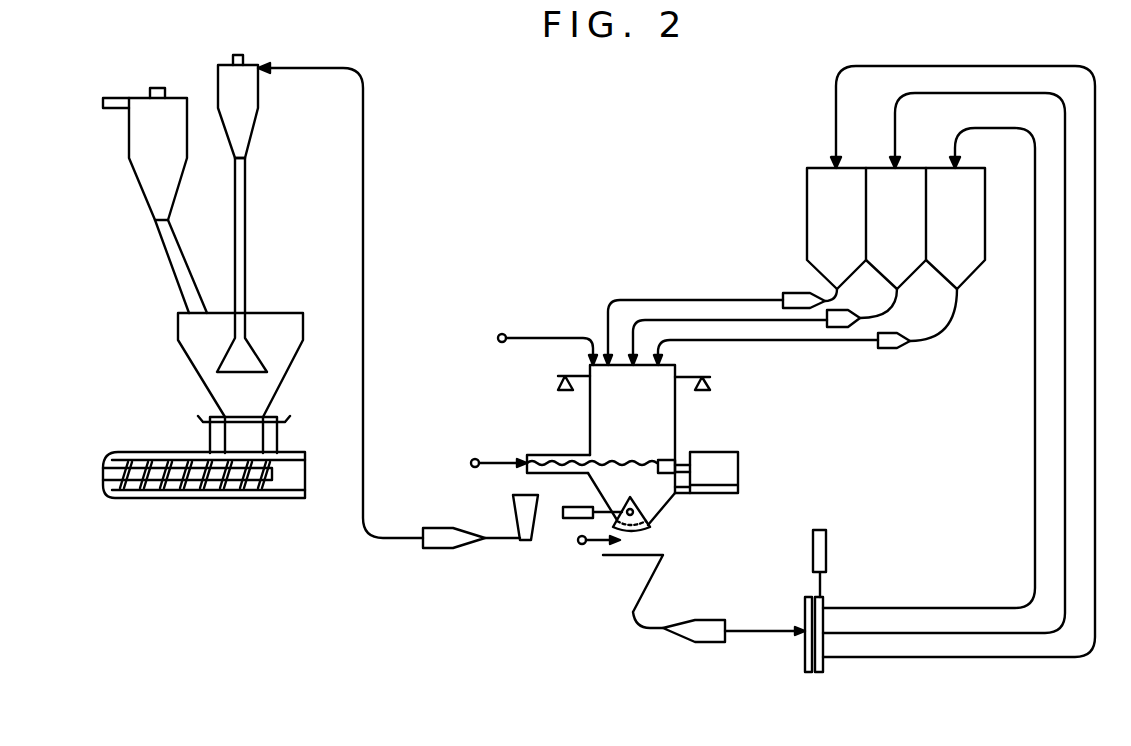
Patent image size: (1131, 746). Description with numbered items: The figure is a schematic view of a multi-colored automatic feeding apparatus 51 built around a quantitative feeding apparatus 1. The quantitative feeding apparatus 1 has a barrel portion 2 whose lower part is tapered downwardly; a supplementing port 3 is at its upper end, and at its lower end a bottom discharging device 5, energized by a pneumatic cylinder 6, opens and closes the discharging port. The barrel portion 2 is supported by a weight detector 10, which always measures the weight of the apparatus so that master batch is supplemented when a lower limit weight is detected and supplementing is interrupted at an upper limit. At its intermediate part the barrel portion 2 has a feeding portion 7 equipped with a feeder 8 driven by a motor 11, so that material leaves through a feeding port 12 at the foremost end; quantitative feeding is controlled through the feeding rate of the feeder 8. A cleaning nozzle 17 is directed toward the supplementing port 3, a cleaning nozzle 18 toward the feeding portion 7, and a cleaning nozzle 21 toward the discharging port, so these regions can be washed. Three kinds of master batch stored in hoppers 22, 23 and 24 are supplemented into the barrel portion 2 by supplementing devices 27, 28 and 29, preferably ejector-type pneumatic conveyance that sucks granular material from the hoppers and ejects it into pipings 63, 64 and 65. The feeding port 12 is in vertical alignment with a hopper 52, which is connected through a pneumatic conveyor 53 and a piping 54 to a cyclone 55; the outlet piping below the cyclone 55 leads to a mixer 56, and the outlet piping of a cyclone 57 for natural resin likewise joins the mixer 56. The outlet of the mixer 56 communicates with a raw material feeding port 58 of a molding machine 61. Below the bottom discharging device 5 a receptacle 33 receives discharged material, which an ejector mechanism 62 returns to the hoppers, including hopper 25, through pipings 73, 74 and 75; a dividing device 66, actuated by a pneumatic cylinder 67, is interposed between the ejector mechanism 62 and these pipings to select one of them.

The quantitative feeding apparatus 1 is at (580, 415).
The barrel portion 2 is at (658, 422).
The supplementing port 3 is at (598, 360).
The bottom discharging device 5 is at (653, 528).
The pneumatic cylinder 6 is at (572, 518).
The feeding portion 7 is at (552, 478).
The feeder 8 is at (603, 453).
The weight detector 10 is at (555, 380).
The motor 11 is at (728, 468).
The feeding port 12 is at (527, 470).
The cleaning nozzle 17 is at (498, 338).
The cleaning nozzle 18 is at (471, 463).
The cleaning nozzle 21 is at (584, 548).
The hopper 22 is at (822, 182).
The hopper 23 is at (887, 188).
The hopper 24 is at (947, 192).
The hopper 25 is at (242, 160).
The supplementing device 27 is at (800, 308).
The supplementing device 28 is at (842, 318).
The supplementing device 29 is at (898, 347).
The receptacle 33 is at (637, 583).
The multi-colored automatic feeding apparatus 51 is at (757, 235).
The hopper 52 is at (527, 510).
The pneumatic conveyor 53 is at (442, 540).
The piping 54 is at (365, 216).
The cyclone 55 is at (243, 118).
The mixer 56 is at (247, 222).
The cyclone 57 is at (150, 158).
The raw material feeding port 58 is at (242, 440).
The molding machine 61 is at (145, 450).
The ejector mechanism 62 is at (700, 635).
The piping 63 is at (672, 300).
The piping 64 is at (717, 318).
The piping 65 is at (760, 340).
The dividing device 66 is at (826, 600).
The pneumatic cylinder 67 is at (828, 548).
The piping 73 is at (1035, 450).
The piping 74 is at (1063, 480).
The piping 75 is at (1093, 510).